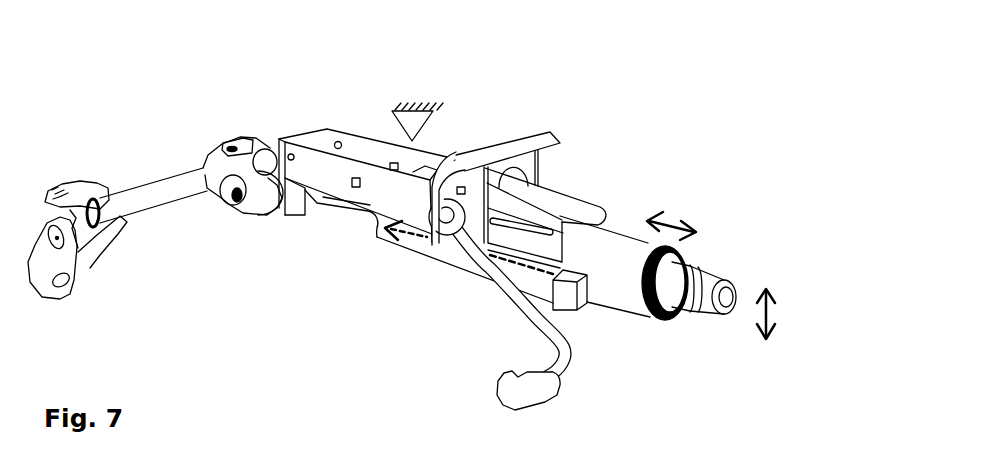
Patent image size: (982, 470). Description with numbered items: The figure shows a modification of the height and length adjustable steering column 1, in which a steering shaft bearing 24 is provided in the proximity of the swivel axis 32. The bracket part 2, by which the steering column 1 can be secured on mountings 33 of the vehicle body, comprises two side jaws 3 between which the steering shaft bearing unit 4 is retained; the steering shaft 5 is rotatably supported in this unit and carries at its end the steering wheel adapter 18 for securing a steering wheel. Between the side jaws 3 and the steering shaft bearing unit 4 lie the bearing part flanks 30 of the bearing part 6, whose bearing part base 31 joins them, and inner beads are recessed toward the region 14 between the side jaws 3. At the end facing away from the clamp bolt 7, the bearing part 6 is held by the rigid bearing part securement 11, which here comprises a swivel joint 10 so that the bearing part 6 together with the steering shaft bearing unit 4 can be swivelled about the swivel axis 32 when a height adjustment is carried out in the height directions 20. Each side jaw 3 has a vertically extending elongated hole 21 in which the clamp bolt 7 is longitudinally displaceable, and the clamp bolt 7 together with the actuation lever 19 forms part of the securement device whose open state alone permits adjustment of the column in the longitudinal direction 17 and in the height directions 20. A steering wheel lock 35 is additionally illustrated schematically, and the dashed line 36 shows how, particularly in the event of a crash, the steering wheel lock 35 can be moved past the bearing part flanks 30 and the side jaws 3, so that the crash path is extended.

The steering column 1 is at (539, 86).
The bracket part 2 is at (545, 137).
The side jaws 3 is at (407, 250).
The steering shaft bearing unit 4 is at (572, 208).
The steering shaft 5 is at (672, 300).
The bearing part 6 is at (385, 192).
The clamp bolt 7 is at (446, 225).
The swivel joint 10 is at (283, 167).
The bearing part securement 11 is at (338, 138).
The region 14 is at (523, 173).
The longitudinal direction 17 is at (672, 220).
The steering wheel adapter 18 is at (728, 320).
The actuation lever 19 is at (562, 385).
The height direction 20 is at (778, 325).
The elongated hole 21 is at (461, 186).
The steering shaft bearing 24 is at (295, 208).
The bearing part flank 30 is at (317, 182).
The bearing part base 31 is at (361, 134).
The swivel axis 32 is at (373, 135).
The mounting 33 is at (418, 100).
The steering wheel lock 35 is at (600, 318).
The dashed line 36 is at (520, 270).